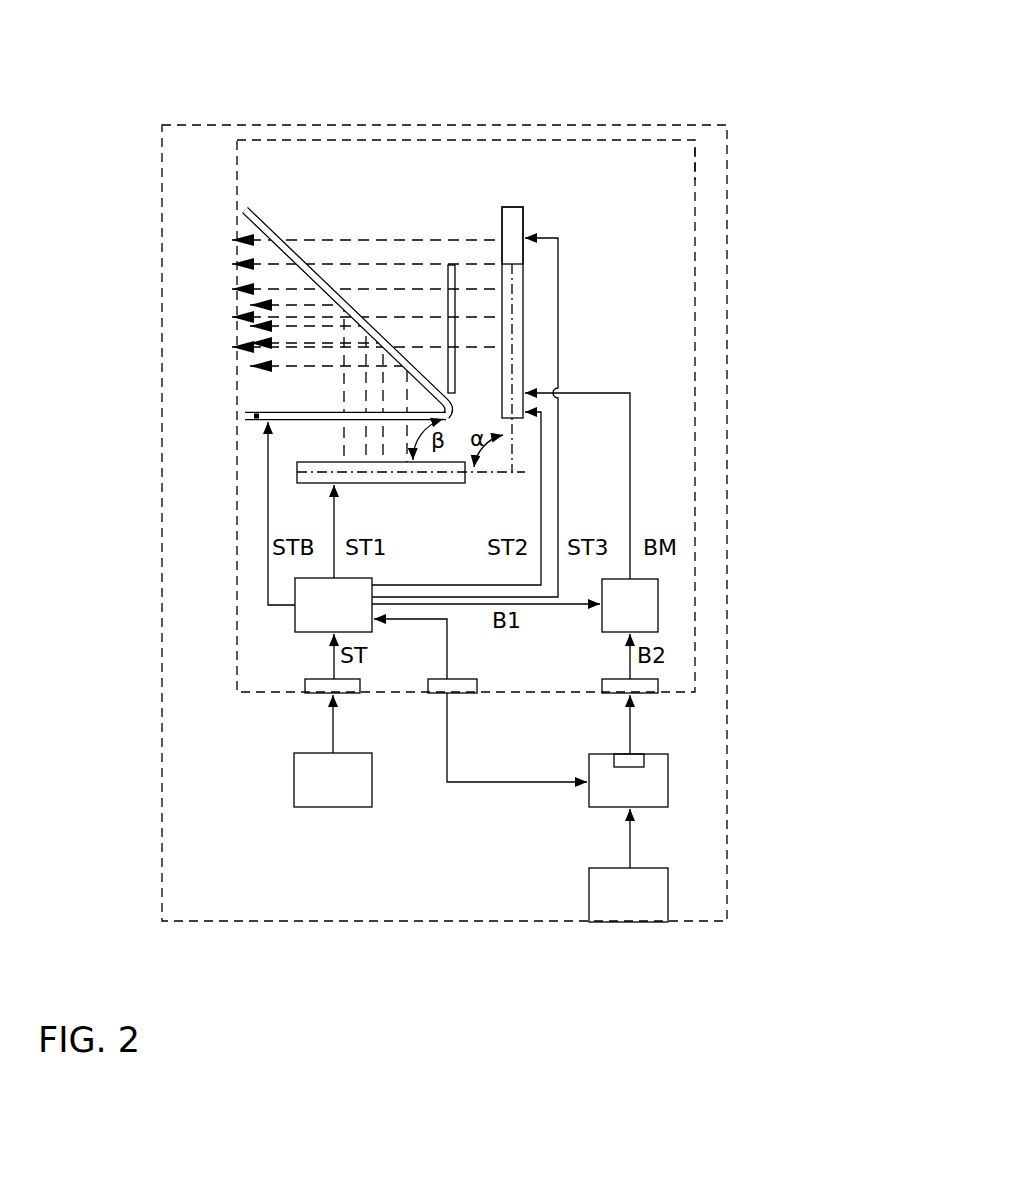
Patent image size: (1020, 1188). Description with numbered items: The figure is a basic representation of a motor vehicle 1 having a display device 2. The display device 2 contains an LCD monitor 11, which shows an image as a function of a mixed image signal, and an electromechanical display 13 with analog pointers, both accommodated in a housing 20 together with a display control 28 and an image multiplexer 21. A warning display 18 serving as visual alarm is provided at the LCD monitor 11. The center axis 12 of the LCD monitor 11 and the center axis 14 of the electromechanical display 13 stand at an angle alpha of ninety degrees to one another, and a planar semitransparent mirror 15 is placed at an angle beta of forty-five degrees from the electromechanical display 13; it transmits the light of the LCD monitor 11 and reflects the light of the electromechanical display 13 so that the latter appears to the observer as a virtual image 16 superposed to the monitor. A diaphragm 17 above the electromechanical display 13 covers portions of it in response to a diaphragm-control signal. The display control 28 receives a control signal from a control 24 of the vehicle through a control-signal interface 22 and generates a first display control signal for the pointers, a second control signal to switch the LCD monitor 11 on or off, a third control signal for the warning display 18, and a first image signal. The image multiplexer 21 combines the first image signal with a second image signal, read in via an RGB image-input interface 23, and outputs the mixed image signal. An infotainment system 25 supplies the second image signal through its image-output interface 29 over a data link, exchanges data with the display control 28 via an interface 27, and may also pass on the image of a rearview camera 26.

The motor vehicle 1 is at (727, 212).
The display device 2 is at (697, 137).
The LCD monitor 11 is at (523, 297).
The center axis 12 is at (512, 372).
The electromechanical display 13 is at (307, 483).
The center axis 14 is at (288, 473).
The semitransparent mirror 15 is at (270, 232).
The virtual image 16 is at (451, 265).
The diaphragm 17 is at (256, 415).
The warning display 18 is at (523, 215).
The housing 20 is at (695, 163).
The image multiplexer 21 is at (630, 605).
The control-signal interface 22 is at (313, 686).
The image-input interface 23 is at (648, 686).
The control 24 is at (312, 790).
The infotainment system 25 is at (647, 800).
The rearview camera 26 is at (647, 898).
The interface 27 is at (437, 687).
The display control 28 is at (333, 605).
The image-output interface 29 is at (638, 760).